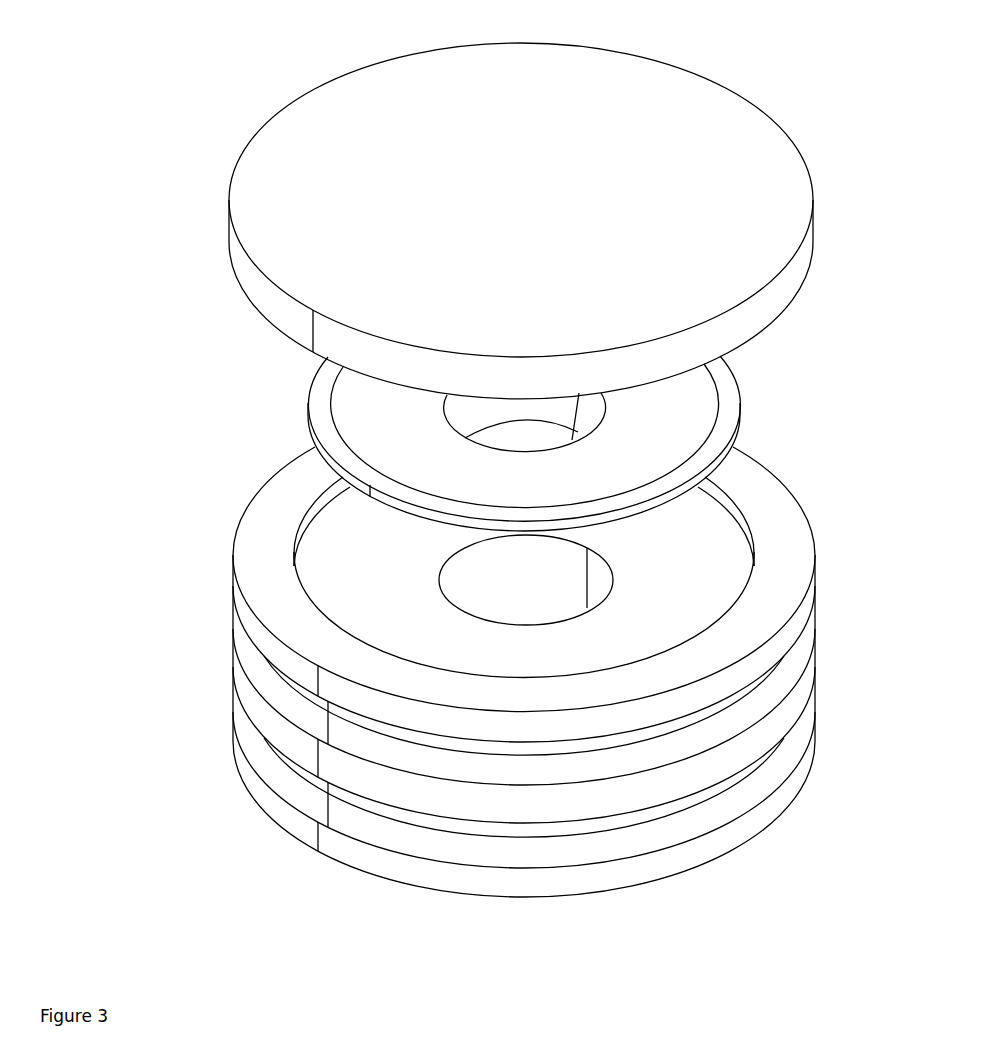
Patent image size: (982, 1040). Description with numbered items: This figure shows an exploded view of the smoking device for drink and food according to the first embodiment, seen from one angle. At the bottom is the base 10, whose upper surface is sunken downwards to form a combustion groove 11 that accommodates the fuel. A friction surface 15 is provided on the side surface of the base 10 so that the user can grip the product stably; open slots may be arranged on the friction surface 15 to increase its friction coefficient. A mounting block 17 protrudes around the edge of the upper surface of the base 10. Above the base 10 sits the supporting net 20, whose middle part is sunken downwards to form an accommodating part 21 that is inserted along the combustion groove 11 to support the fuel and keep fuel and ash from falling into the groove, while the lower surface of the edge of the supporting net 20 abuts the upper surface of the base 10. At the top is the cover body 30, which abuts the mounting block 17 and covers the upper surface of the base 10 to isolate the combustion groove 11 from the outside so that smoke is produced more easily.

The base 10 is at (515, 705).
The combustion groove 11 is at (552, 590).
The friction surface 15 is at (770, 727).
The mounting block 17 is at (270, 571).
The supporting net 20 is at (505, 419).
The accommodating part 21 is at (568, 432).
The cover body 30 is at (668, 165).